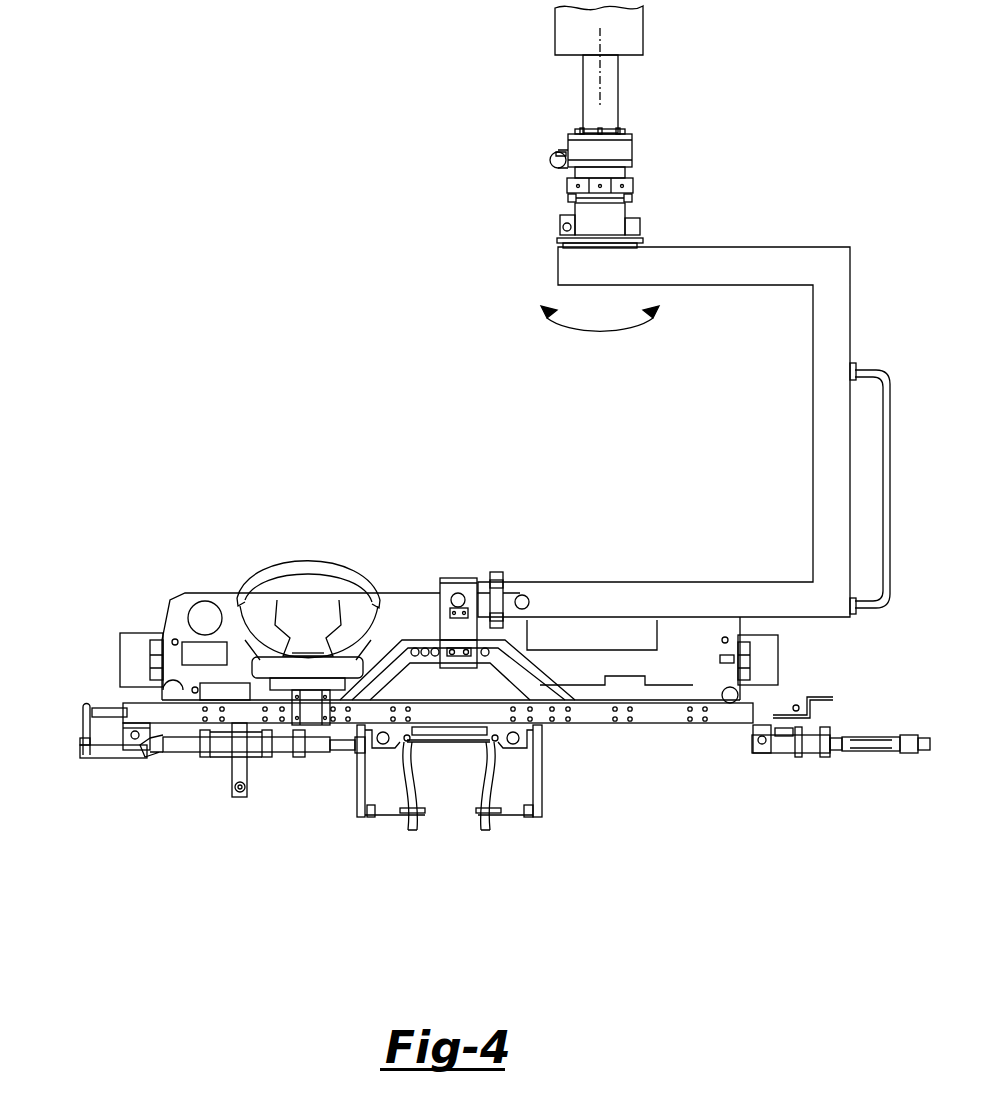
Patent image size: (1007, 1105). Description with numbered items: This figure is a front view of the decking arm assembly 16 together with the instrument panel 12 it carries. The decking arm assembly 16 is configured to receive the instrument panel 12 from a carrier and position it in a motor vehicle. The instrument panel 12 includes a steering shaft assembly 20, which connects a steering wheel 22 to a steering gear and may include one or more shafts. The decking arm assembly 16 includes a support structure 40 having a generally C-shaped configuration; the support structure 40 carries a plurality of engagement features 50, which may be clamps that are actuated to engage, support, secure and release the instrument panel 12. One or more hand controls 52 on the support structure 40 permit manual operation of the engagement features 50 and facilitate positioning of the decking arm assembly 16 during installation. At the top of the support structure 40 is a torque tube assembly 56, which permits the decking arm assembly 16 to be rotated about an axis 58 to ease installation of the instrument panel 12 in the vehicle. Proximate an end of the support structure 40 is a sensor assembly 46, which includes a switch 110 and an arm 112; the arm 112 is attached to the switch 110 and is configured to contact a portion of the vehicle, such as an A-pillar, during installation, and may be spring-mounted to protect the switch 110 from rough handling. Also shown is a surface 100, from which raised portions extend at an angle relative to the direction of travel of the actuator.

The instrument panel 12 is at (190, 602).
The decking arm assembly 16 is at (357, 207).
The steering shaft assembly 20 is at (312, 723).
The steering wheel 22 is at (345, 567).
The support structure 40 is at (848, 263).
The sensor assembly 46 is at (75, 735).
The engagement features 50 is at (160, 633).
The hand controls 52 is at (830, 695).
The torque tube assembly 56 is at (652, 193).
The axis 58 is at (598, 87).
The surface 100 is at (85, 758).
The switch 110 is at (135, 750).
The arm 112 is at (82, 715).